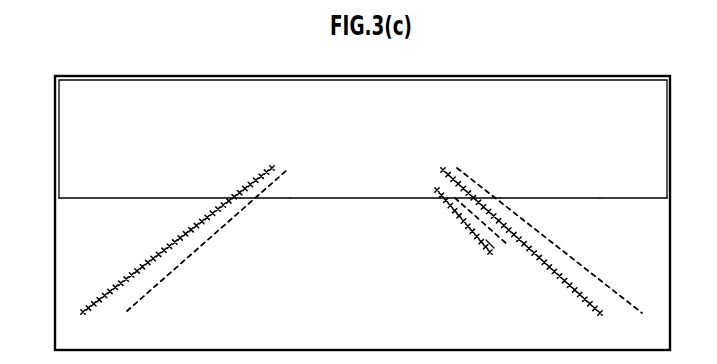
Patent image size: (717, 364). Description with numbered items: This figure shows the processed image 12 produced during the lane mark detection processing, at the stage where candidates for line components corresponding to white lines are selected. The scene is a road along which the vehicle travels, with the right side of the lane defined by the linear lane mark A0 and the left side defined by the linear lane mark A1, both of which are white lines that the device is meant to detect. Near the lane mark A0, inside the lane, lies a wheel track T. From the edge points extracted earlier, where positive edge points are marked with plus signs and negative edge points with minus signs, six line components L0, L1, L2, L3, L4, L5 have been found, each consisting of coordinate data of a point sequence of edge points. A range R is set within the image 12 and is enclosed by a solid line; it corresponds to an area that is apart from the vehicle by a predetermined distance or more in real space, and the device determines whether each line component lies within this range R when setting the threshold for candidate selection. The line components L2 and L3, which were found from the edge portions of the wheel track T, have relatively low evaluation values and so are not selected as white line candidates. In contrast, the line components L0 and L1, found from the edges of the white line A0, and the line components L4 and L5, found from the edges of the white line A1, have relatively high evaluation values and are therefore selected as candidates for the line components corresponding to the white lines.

The image I2 12 is at (618, 76).
The range R is at (650, 162).
The lane mark A1 is at (255, 190).
The lane mark A0 is at (472, 187).
The wheel track T is at (490, 233).
The line component L0 is at (628, 298).
The line component L1 is at (593, 307).
The line component L2 is at (512, 250).
The line component L3 is at (490, 252).
The line component L4 is at (130, 307).
The line component L5 is at (98, 300).